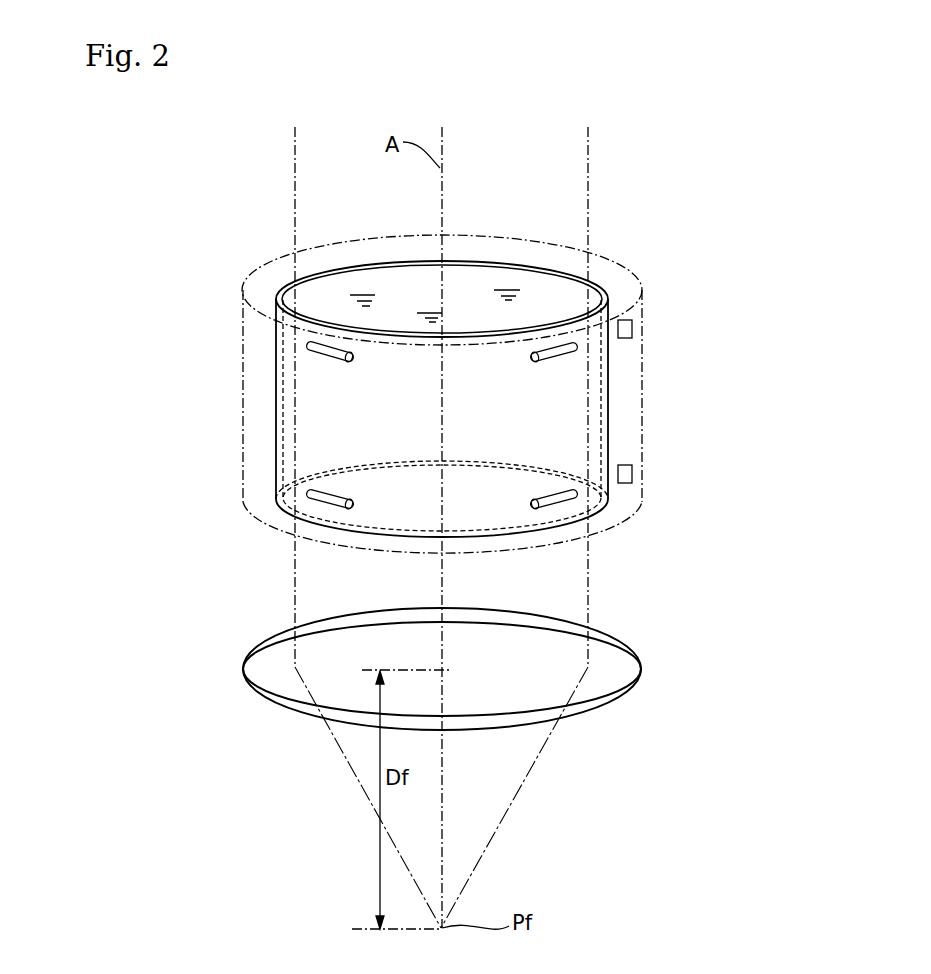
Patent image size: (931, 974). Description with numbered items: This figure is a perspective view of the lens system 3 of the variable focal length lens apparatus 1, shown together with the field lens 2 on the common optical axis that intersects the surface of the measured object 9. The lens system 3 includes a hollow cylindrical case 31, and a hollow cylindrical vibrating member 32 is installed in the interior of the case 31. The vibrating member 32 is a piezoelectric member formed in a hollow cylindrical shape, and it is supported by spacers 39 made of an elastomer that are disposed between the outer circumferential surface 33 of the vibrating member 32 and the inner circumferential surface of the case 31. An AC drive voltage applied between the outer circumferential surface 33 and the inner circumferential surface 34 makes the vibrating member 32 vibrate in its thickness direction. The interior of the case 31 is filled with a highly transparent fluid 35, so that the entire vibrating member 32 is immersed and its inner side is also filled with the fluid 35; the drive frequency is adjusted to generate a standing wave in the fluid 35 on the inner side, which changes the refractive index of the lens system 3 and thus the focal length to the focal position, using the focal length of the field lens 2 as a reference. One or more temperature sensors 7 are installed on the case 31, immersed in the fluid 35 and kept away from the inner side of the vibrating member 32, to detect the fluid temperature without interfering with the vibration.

The variable focal length lens apparatus 1 is at (726, 181).
The field lens 2 is at (240, 659).
The lens system 3 is at (236, 284).
The temperature sensor 7 is at (633, 321).
The measured object 9 is at (352, 930).
The case 31 is at (243, 360).
The vibrating member 32 is at (276, 428).
The outer circumferential surface 33 is at (597, 284).
The inner circumferential surface 34 is at (554, 302).
The fluid 35 is at (503, 288).
The spacers 39 is at (334, 493).